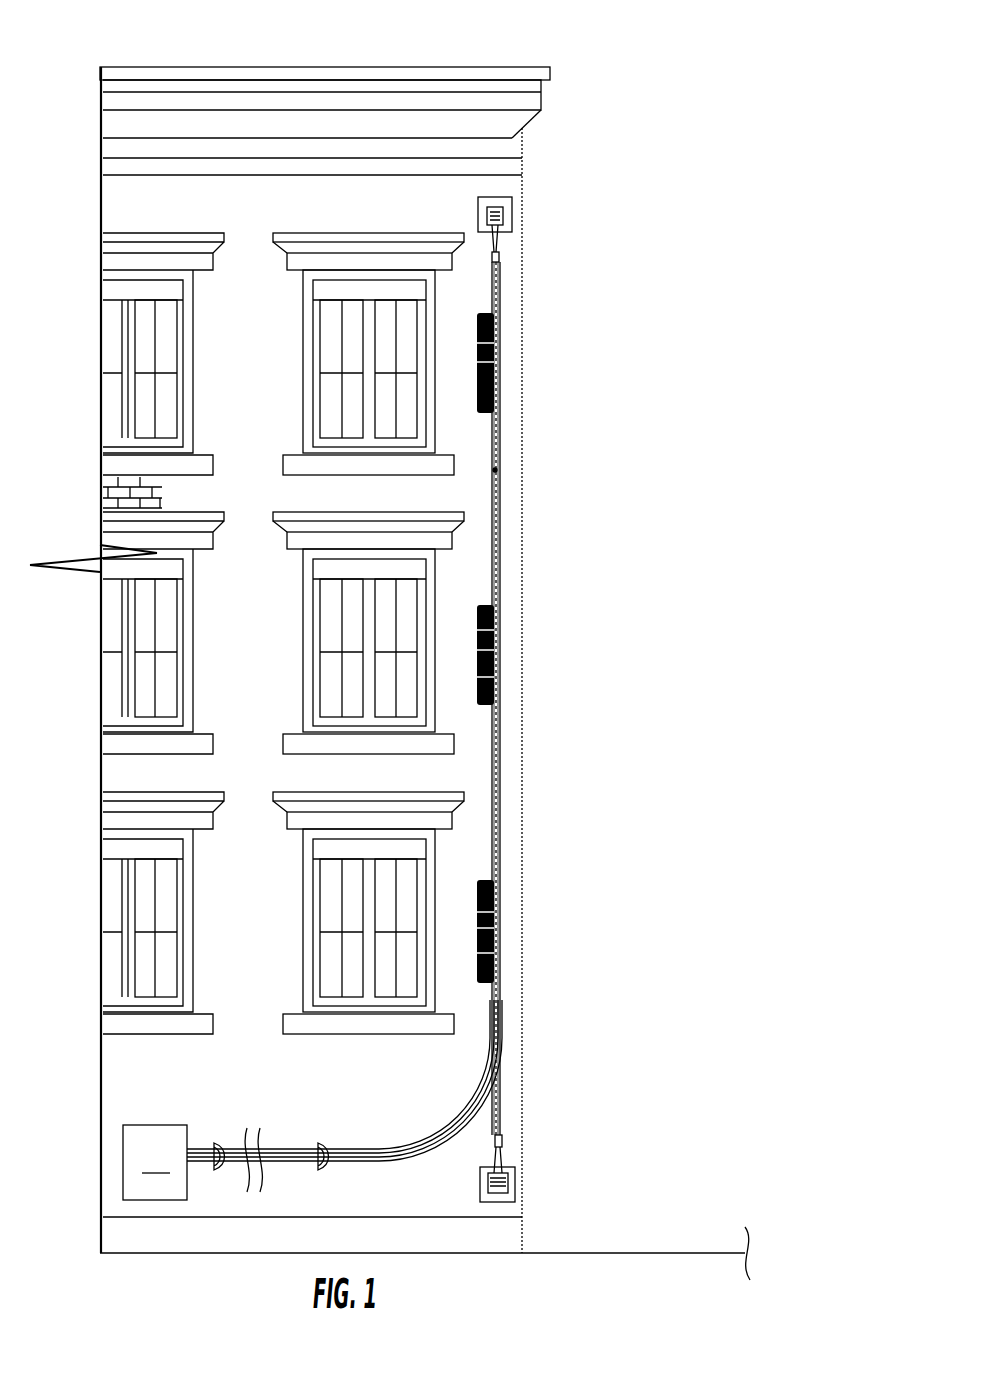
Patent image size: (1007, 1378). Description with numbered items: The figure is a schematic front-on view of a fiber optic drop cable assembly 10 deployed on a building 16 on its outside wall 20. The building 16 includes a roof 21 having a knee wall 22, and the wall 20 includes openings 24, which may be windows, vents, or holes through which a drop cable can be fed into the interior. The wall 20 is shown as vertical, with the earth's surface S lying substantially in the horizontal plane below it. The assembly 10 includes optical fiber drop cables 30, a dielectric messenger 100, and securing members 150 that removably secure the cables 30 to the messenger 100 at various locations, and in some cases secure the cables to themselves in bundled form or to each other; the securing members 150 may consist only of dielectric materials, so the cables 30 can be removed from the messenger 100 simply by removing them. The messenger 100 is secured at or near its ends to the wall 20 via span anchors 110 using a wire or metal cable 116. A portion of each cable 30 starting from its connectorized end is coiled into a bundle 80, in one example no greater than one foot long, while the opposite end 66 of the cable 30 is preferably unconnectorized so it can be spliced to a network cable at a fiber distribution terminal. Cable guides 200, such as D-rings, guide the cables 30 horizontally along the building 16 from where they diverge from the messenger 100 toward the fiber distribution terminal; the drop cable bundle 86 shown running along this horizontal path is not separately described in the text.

The fiber optic assembly 10 is at (466, 1082).
The building 16 is at (544, 150).
The outside wall 20 is at (512, 628).
The roof 21 is at (460, 53).
The knee wall 22 is at (496, 63).
The openings 24 is at (303, 363).
The optical fiber drop cables 30 is at (497, 510).
The opposite end 66 is at (196, 1136).
The bundle 80 is at (495, 322).
The drop cables 86 is at (462, 1118).
The dielectric messenger 100 is at (498, 335).
The span anchors 110 is at (505, 207).
The wire or metal cable 116 is at (480, 222).
The securing members 150 is at (497, 357).
The cable guides 200 is at (221, 1148).
The earth's surface S is at (665, 1249).